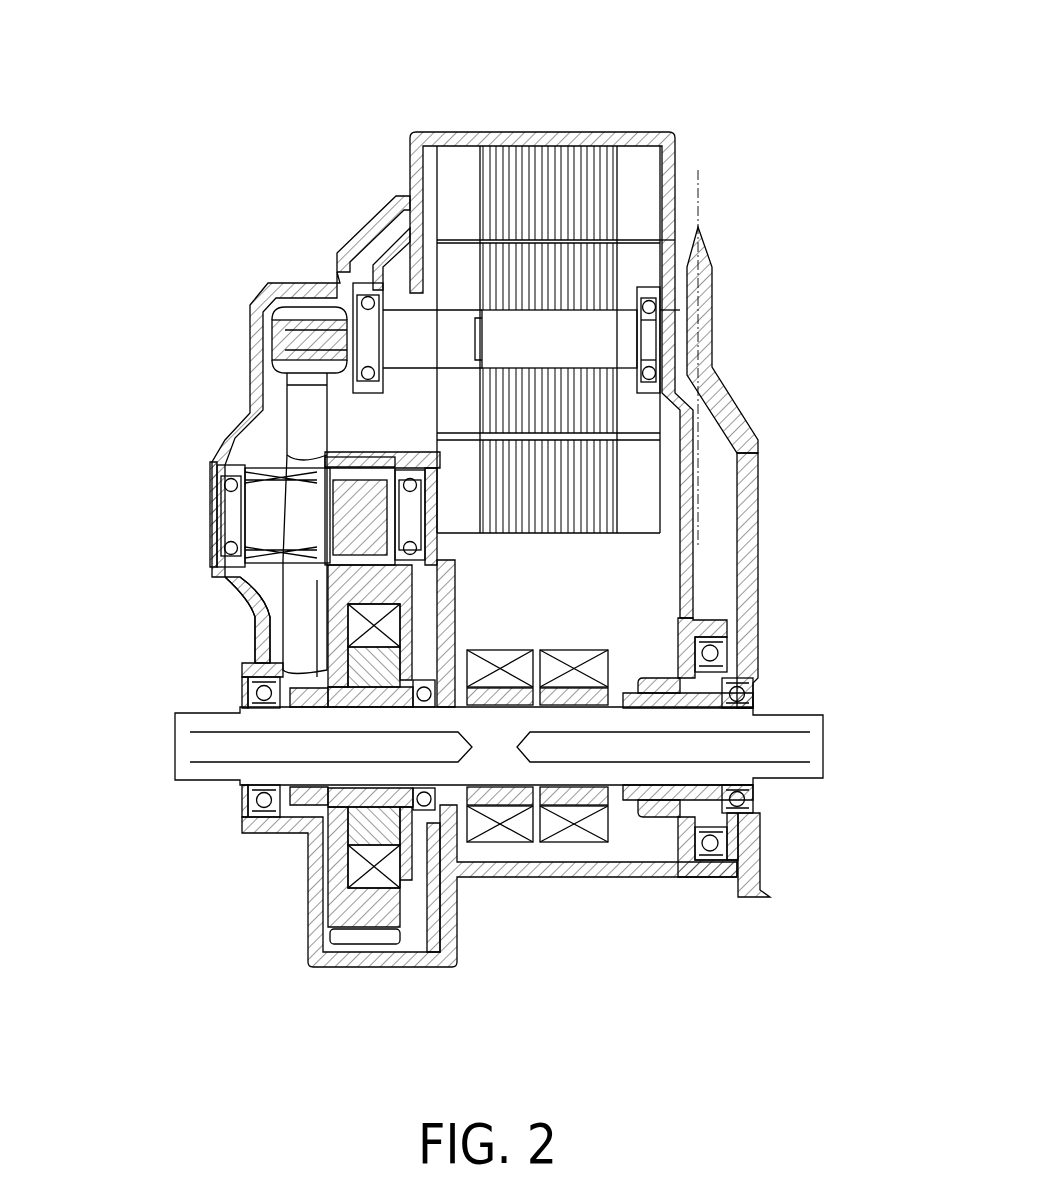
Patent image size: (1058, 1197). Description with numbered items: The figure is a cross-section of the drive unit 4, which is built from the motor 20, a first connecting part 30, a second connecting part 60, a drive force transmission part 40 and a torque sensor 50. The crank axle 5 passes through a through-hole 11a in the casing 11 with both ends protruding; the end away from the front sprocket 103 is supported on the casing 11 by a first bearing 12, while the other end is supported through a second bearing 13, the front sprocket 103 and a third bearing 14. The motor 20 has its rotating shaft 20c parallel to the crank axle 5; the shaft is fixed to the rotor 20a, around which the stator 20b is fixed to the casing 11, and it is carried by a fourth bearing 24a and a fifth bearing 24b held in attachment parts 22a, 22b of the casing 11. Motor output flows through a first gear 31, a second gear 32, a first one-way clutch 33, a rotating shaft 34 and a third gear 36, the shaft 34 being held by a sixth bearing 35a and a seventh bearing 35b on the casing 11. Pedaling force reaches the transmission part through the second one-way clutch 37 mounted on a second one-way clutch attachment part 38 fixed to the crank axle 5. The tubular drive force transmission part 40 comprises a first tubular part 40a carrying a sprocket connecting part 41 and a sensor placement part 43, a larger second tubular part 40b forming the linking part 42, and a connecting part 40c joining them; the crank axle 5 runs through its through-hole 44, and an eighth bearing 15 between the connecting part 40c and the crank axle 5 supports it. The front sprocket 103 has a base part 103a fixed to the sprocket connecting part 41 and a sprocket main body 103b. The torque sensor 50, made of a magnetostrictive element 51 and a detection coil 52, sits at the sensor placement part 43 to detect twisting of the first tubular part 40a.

The drive unit 4 is at (614, 311).
The crank axle 5 is at (795, 726).
The casing 11 is at (358, 974).
The through-hole 11a is at (235, 790).
The first bearing 12 is at (247, 684).
The second bearing 13 is at (758, 707).
The third bearing 14 is at (735, 845).
The eighth bearing 15 is at (435, 885).
The motor 20 is at (808, 130).
The rotor 20a is at (637, 255).
The stator 20b is at (637, 162).
The rotating shaft 20c is at (613, 328).
The attachment part 22a is at (398, 248).
The attachment part 22b is at (660, 290).
The fourth bearing 24a is at (357, 277).
The fifth bearing 24b is at (660, 316).
The first connecting part 30 is at (344, 467).
The first gear 31 is at (262, 315).
The second gear 32 is at (297, 402).
The first one-way clutch 33 is at (232, 478).
The rotating shaft 34 is at (268, 505).
The sixth bearing 35a is at (228, 548).
The seventh bearing 35b is at (438, 548).
The third gear 36 is at (360, 548).
The second one-way clutch 37 is at (255, 622).
The second one-way clutch attachment part 38 is at (272, 656).
The drive force transmission part 40 is at (475, 633).
The first tubular part 40a is at (537, 656).
The second tubular part 40b is at (400, 580).
The connecting part 40c is at (415, 620).
The sprocket connecting part 41 is at (753, 678).
The linking part 42 is at (300, 592).
The sensor placement part 43 is at (515, 850).
The through-hole 44 is at (652, 716).
The torque sensor 50 is at (529, 851).
The magnetostrictive element 51 is at (478, 860).
The detection coil 52 is at (505, 870).
The second connecting part 60 is at (187, 627).
The front sprocket 103 is at (803, 439).
The base part 103a is at (708, 645).
The sprocket main body 103b is at (745, 415).